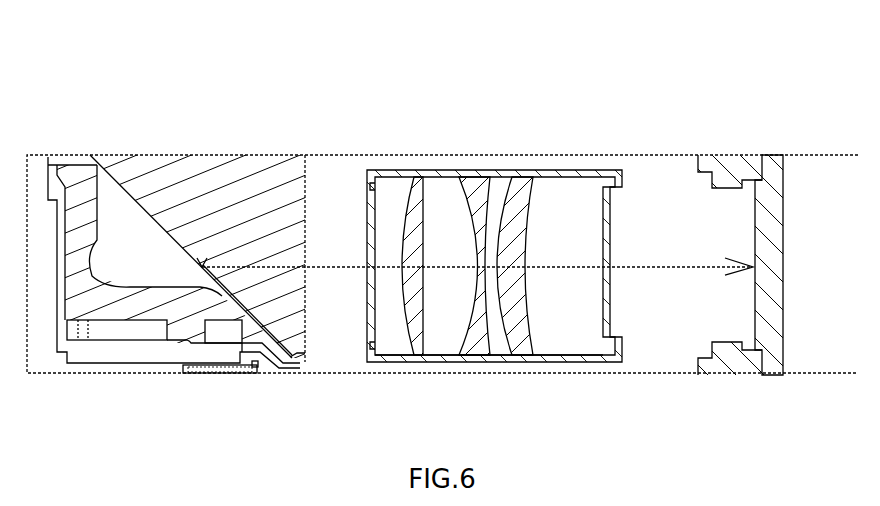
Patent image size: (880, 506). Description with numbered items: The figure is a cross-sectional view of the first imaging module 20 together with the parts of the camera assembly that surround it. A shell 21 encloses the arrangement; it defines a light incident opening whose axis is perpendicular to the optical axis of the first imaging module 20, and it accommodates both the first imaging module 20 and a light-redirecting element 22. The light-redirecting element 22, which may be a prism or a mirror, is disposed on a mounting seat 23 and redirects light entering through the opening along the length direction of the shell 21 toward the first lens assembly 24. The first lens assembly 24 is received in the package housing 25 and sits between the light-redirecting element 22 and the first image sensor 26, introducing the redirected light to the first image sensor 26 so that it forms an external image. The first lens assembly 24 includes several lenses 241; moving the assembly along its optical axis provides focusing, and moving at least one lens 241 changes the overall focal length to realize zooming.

The first imaging module 20 is at (152, 80).
The shell 21 is at (58, 368).
The light-redirecting element 22 is at (291, 312).
The mounting seat 23 is at (191, 328).
The first lens assembly 24 is at (402, 356).
The lenses 241 is at (422, 190).
The package housing 25 is at (458, 357).
The first image sensor 26 is at (765, 377).